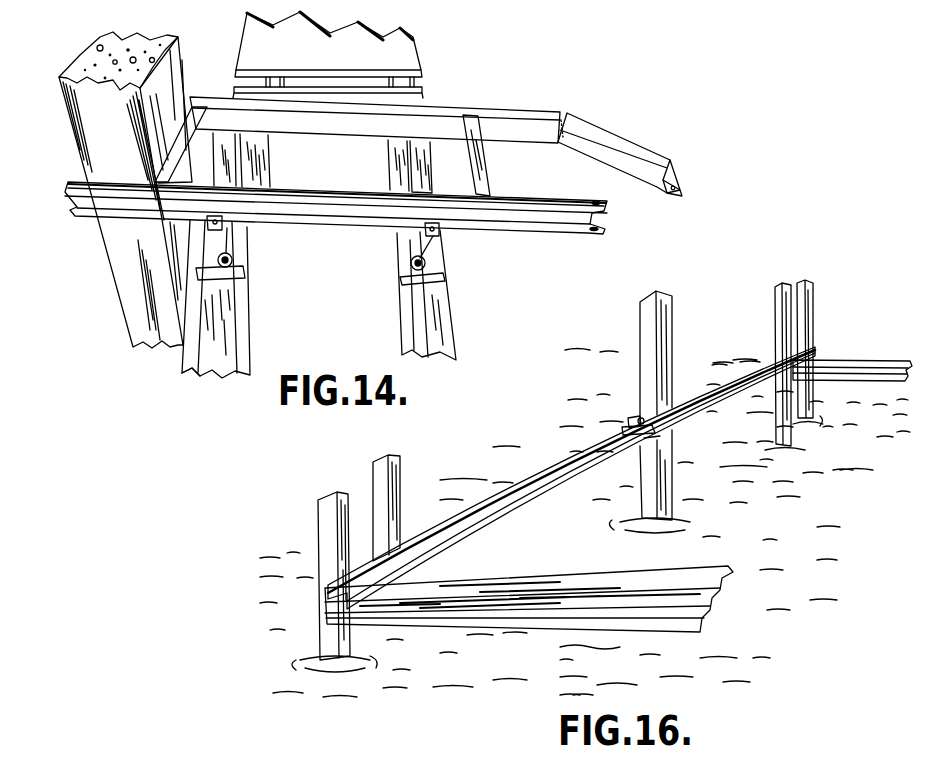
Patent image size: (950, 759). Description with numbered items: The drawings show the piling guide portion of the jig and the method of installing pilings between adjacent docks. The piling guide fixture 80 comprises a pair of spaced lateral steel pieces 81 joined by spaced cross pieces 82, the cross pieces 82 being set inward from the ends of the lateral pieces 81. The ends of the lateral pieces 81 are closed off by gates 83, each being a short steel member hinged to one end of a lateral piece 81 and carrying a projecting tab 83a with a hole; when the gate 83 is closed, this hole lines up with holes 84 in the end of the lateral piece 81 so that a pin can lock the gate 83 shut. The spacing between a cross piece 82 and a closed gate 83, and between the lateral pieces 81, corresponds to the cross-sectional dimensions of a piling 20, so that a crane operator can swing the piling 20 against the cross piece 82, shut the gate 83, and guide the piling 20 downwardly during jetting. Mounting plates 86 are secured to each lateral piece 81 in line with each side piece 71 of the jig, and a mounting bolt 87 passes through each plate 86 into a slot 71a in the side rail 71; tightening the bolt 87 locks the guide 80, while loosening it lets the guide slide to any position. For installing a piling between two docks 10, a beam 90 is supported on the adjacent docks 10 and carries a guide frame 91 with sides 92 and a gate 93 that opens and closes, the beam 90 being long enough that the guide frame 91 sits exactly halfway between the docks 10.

In FIG. 16, the dock 10 is at (455, 608).
In FIG. 14, the piling 20 is at (139, 266).
In FIG. 16, the piling 20 is at (679, 326).
In FIG. 14, the side piece 71 is at (238, 328).
In FIG. 14, the slot 71a is at (205, 364).
In FIG. 14, the piling guide fixture 80 is at (463, 96).
In FIG. 14, the lateral steel piece 81 is at (360, 108).
In FIG. 14, the cross piece 82 is at (192, 115).
In FIG. 14, the gate 83 is at (626, 145).
In FIG. 14, the projecting tab 83a is at (680, 186).
In FIG. 14, the hole 84 is at (605, 204).
In FIG. 14, the mounting plate 86 is at (240, 246).
In FIG. 14, the mounting bolt 87 is at (233, 262).
In FIG. 16, the beam 90 is at (558, 496).
In FIG. 16, the guide frame 91 is at (628, 430).
In FIG. 16, the side 92 is at (677, 405).
In FIG. 16, the gate 93 is at (639, 418).